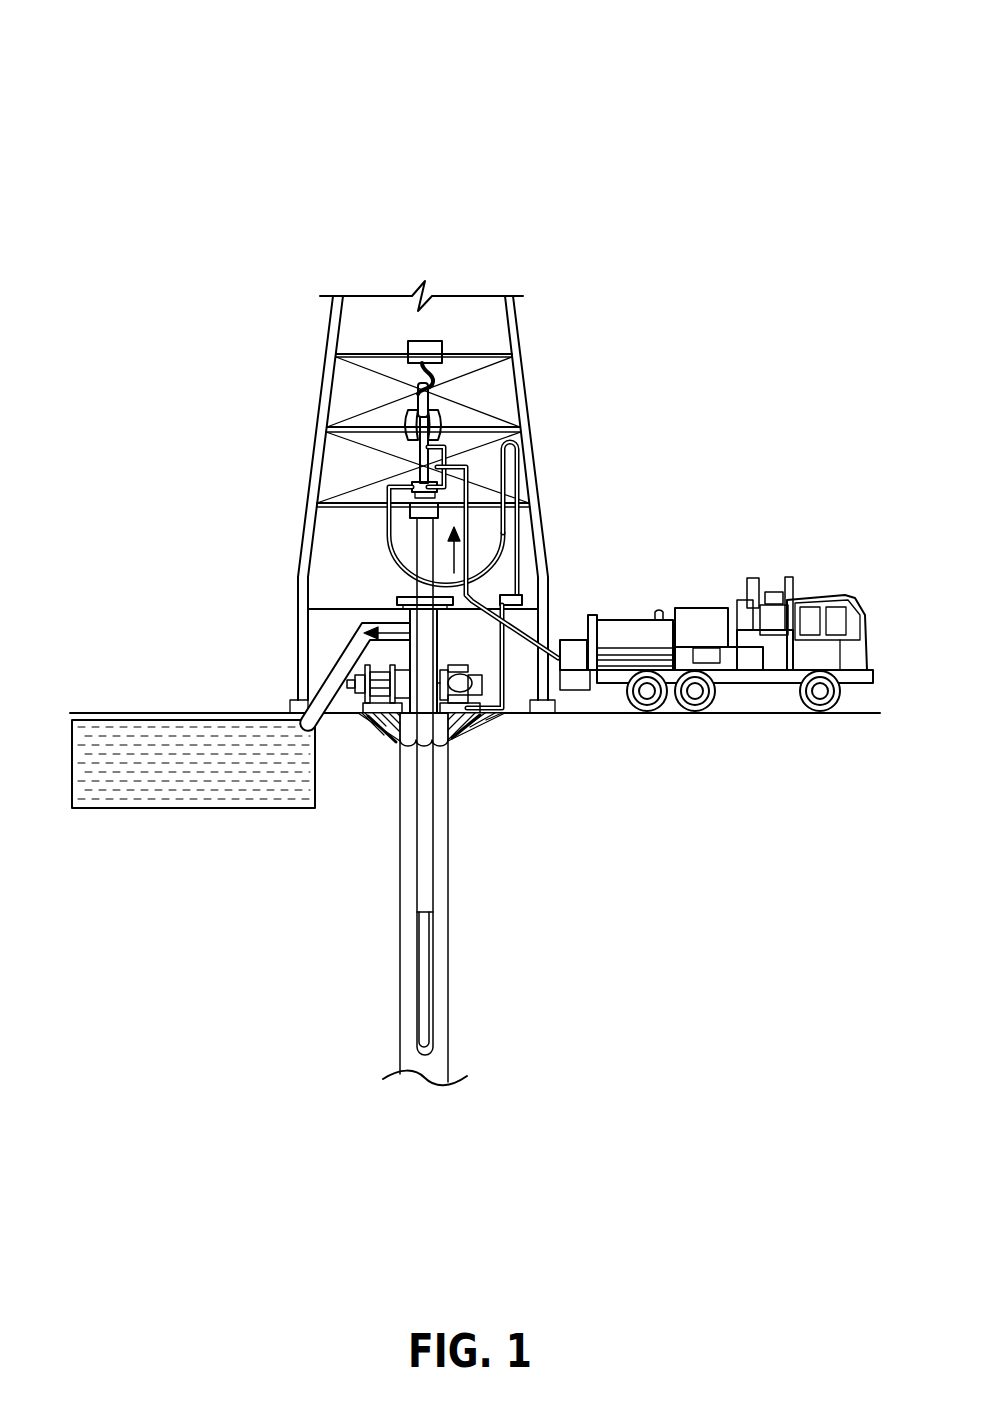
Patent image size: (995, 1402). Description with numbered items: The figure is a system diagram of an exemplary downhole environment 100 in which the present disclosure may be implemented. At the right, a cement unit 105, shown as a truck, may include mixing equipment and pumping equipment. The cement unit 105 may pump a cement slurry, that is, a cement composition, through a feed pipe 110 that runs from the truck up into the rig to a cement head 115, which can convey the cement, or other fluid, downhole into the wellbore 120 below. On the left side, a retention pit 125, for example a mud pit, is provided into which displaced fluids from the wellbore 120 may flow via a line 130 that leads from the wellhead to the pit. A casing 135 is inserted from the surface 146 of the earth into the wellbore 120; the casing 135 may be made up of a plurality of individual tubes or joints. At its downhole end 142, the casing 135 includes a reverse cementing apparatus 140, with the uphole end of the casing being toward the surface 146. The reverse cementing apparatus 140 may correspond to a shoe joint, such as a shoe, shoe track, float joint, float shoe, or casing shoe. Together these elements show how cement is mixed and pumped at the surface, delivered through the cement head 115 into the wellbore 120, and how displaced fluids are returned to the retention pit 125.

The downhole environment 100 is at (110, 47).
The cement unit 105 is at (748, 700).
The feed pipe 110 is at (533, 630).
The cement head 115 is at (479, 415).
The wellbore 120 is at (450, 805).
The retention pit 125 is at (195, 810).
The line 130 is at (328, 697).
The casing 135 is at (434, 770).
The reverse cementing apparatus 140 is at (426, 937).
The downhole end 142 is at (429, 897).
The surface 146 is at (222, 712).